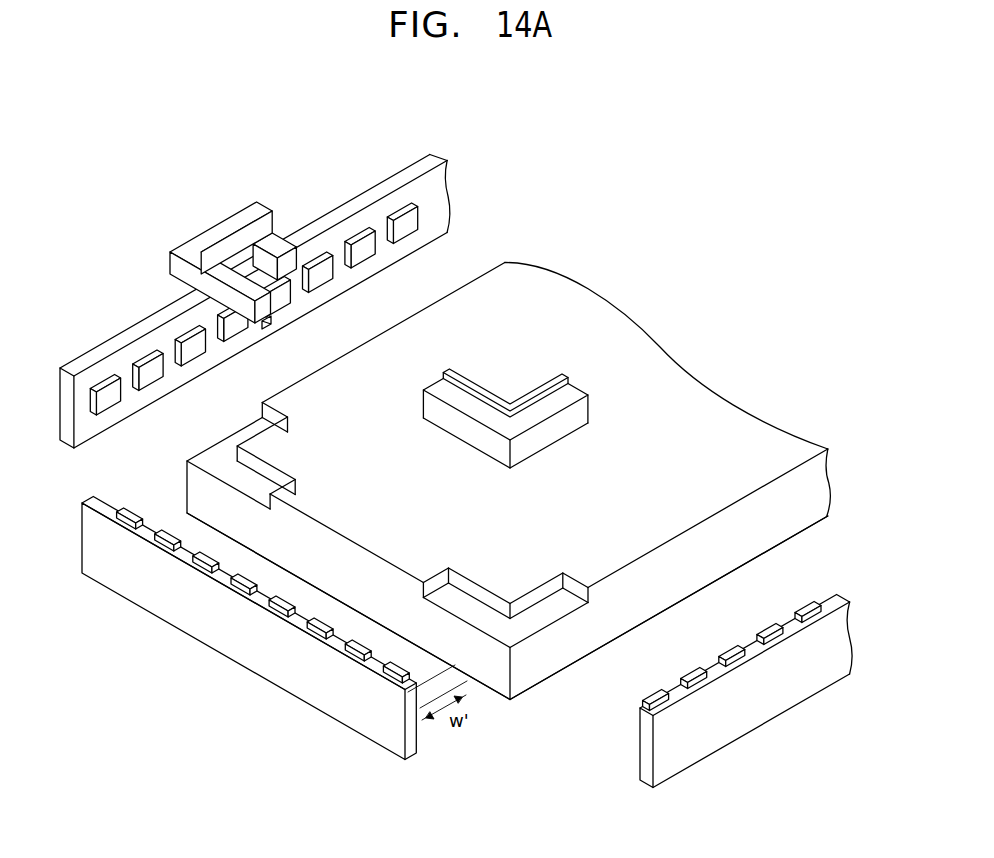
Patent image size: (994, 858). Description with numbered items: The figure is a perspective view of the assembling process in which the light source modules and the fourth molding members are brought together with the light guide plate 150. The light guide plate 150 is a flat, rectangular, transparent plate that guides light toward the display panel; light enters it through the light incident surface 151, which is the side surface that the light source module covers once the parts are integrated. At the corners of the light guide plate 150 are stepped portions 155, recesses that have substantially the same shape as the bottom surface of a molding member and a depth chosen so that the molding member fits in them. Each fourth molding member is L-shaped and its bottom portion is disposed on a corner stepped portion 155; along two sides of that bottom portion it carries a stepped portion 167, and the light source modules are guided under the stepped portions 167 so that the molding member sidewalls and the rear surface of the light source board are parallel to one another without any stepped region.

The light guide plate 150 is at (696, 578).
The light incident surface 151 is at (497, 692).
The stepped portion 155 is at (539, 616).
The stepped portion 167 is at (266, 331).